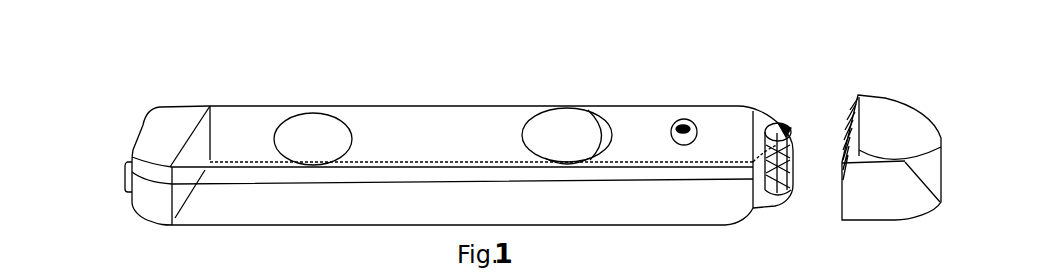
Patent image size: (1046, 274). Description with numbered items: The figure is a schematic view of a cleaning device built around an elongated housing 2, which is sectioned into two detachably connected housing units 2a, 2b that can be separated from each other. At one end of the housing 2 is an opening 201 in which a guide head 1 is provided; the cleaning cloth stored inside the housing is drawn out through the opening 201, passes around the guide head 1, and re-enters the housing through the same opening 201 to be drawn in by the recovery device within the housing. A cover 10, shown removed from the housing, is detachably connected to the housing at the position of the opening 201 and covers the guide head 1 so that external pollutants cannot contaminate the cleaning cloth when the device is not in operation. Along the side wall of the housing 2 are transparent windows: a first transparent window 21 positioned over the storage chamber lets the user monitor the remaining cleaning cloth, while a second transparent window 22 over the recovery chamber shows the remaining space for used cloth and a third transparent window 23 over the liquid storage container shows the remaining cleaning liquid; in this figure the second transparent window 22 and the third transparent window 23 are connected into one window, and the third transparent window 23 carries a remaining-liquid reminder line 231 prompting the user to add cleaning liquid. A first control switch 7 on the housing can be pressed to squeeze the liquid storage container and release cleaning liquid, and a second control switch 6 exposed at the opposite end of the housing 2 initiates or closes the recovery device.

The guide head 1 is at (793, 140).
The cover 10 is at (888, 127).
The housing 2 is at (452, 44).
The housing unit 2a is at (450, 118).
The housing unit 2b is at (403, 198).
The first transparent window 21 is at (313, 133).
The second transparent window 22 is at (555, 125).
The third transparent window 23 is at (573, 142).
The remaining-liquid reminder line 231 is at (607, 133).
The opening 201 is at (787, 124).
The second control switch 6 is at (128, 166).
The first control switch 7 is at (684, 124).